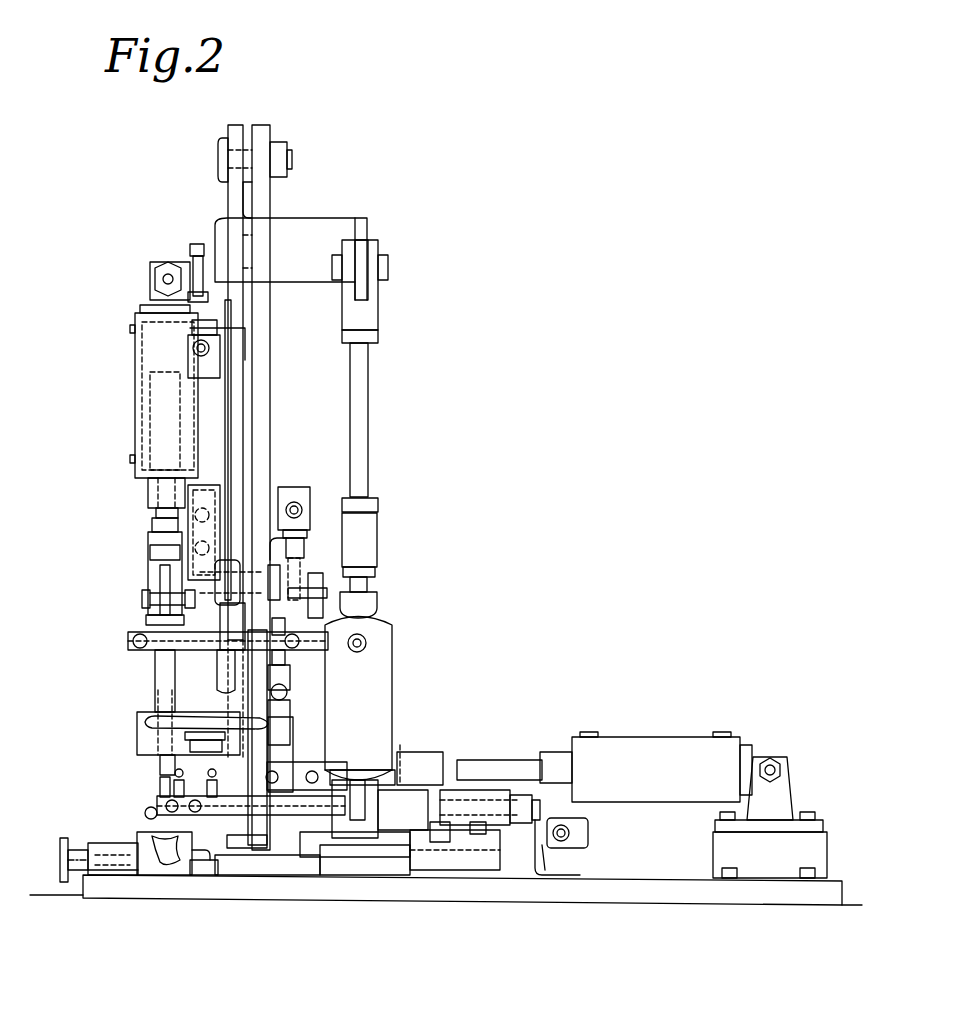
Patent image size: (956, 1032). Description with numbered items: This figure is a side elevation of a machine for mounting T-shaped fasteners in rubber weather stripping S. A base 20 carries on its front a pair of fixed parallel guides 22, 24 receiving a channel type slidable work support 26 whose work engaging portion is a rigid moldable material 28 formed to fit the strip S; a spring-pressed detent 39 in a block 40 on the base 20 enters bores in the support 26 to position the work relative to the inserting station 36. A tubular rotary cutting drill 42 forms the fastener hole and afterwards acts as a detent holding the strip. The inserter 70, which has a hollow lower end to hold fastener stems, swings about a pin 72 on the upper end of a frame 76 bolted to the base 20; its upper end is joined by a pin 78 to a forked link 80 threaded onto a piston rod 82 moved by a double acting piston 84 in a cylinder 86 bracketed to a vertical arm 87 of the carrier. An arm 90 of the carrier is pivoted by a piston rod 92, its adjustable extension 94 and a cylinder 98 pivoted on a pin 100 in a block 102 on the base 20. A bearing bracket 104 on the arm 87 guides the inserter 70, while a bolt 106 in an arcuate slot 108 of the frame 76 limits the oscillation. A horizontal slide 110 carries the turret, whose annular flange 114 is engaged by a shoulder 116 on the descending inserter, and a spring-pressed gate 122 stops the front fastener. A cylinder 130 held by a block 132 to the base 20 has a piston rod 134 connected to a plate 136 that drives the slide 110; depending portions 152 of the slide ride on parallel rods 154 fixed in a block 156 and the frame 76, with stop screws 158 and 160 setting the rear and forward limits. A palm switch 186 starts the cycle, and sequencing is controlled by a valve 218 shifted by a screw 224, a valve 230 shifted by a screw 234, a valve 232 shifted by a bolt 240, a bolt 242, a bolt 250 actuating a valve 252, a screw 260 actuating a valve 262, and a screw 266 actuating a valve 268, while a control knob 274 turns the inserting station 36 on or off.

The base 20 is at (633, 898).
The fixed parallel guide 22 is at (125, 878).
The fixed parallel guide 24 is at (207, 876).
The work support 26 is at (198, 858).
The moldable material 28 is at (140, 842).
The inserting station 36 is at (112, 735).
The spring-pressed detent 39 is at (58, 850).
The block 40 is at (100, 878).
The rotary cutting drill 42 is at (170, 775).
The inserter 70 is at (155, 668).
The pin 72 is at (292, 158).
The frame 76 is at (262, 420).
The pin 78 is at (142, 600).
The link 80 is at (150, 562).
The piston rod 82 is at (160, 437).
The double acting piston 84 is at (148, 378).
The cylinder 86 is at (135, 358).
The vertical arm 87 is at (232, 420).
The arm 90 is at (322, 220).
The piston rod 92 is at (370, 581).
The adjustable extension 94 is at (367, 392).
The cylinder 98 is at (390, 652).
The pin 100 is at (385, 792).
The block 102 is at (350, 860).
The bearing bracket 104 is at (140, 728).
The bolt 106 is at (220, 586).
The arcuate slot 108 is at (243, 600).
The horizontal slide 110 is at (440, 760).
The annular flange 114 is at (240, 778).
The shoulder 116 is at (155, 765).
The spring-pressed gate 122 is at (152, 812).
The cylinder 130 is at (652, 745).
The block 132 is at (713, 849).
The double acting piston rod 134 is at (500, 762).
The plate 136 is at (337, 760).
The depending portion 152 is at (240, 850).
The parallel rod 154 is at (445, 858).
The block 156 is at (546, 862).
The stop screw 158 is at (528, 808).
The stop screw 160 is at (225, 862).
The palm switch 186 is at (215, 720).
The cyclically operated valve 218 is at (410, 750).
The screw 224 is at (512, 792).
The spring-return valve 230 is at (290, 700).
The spring-return valve 232 is at (590, 830).
The screw 234 is at (285, 675).
The bolt 240 is at (480, 836).
The bolt 242 is at (340, 625).
The bolt 250 is at (180, 553).
The valve 252 is at (215, 485).
The screw 260 is at (198, 244).
The valve 262 is at (218, 370).
The screw 266 is at (298, 560).
The valve 268 is at (303, 490).
The control knob 274 is at (218, 680).
The weather stripping S is at (163, 862).